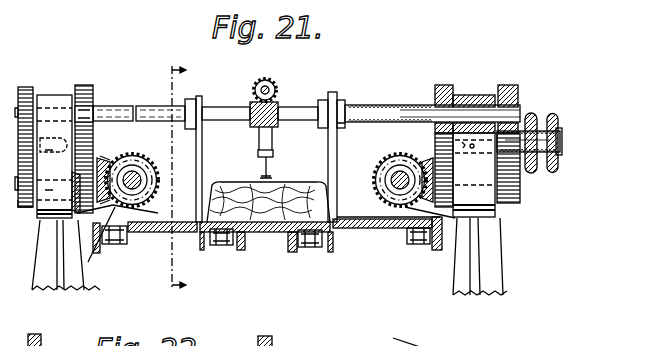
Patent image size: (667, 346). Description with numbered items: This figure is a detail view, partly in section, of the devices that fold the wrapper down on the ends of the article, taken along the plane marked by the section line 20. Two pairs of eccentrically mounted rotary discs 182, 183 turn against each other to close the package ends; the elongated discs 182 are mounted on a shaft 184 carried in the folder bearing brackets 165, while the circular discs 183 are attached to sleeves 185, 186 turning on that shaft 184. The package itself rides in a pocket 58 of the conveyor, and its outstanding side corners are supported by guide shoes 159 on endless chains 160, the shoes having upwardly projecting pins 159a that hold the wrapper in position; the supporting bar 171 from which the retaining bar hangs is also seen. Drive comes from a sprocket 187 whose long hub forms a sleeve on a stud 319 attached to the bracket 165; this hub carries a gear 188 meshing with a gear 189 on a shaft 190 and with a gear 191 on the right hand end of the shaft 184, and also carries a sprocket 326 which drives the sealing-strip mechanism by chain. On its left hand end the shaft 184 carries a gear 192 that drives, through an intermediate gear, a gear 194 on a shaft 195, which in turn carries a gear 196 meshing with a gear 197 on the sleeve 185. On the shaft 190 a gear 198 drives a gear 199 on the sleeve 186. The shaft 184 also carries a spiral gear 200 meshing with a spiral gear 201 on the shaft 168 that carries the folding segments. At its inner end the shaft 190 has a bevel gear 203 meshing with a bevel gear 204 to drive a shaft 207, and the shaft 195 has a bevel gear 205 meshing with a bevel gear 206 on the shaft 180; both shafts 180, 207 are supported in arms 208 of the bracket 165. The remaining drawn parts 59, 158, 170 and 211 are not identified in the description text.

In FIG. 21, the section line 20 is at (189, 179).
In FIG. 21, the pocket 58 is at (227, 247).
In FIG. 21, the roller 59 is at (305, 247).
In FIG. 21, the bracket 158 is at (243, 251).
In FIG. 21, the guide shoe 159 is at (128, 244).
In FIG. 21, the upwardly projecting pin 159a is at (127, 248).
In FIG. 21, the endless chain 160 is at (420, 245).
In FIG. 21, the folder bearing bracket 165 is at (50, 95).
In FIG. 21, the shaft 168 is at (271, 78).
In FIG. 21, the hay mass 170 is at (276, 179).
In FIG. 21, the supporting bar 171 is at (258, 152).
In FIG. 21, the shaft 180 is at (134, 181).
In FIG. 21, the eccentrically mounted rotary disc 182 is at (328, 141).
In FIG. 21, the eccentrically mounted rotary disc 183 is at (196, 161).
In FIG. 21, the shaft 184 is at (291, 106).
In FIG. 21, the sleeve 185 is at (147, 106).
In FIG. 21, the sleeve 186 is at (368, 105).
In FIG. 21, the sprocket 187 is at (550, 174).
In FIG. 21, the gear 188 is at (522, 120).
In FIG. 21, the gear 189 is at (503, 200).
In FIG. 21, the shaft 190 is at (478, 182).
In FIG. 21, the gear 191 is at (512, 81).
In FIG. 21, the gear 192 is at (25, 86).
In FIG. 21, the gear 194 is at (28, 207).
In FIG. 21, the shaft 195 is at (54, 164).
In FIG. 21, the gear 196 is at (96, 242).
In FIG. 21, the gear 197 is at (90, 86).
In FIG. 21, the gear 198 is at (450, 222).
In FIG. 21, the gear 199 is at (437, 86).
In FIG. 21, the spiral gear 200 is at (279, 103).
In FIG. 21, the spiral gear 201 is at (253, 87).
In FIG. 21, the bevel gear 203 is at (435, 145).
In FIG. 21, the bevel gear 204 is at (387, 200).
In FIG. 21, the bevel gear 205 is at (101, 160).
In FIG. 21, the bevel gear 206 is at (150, 158).
In FIG. 21, the shaft 207 is at (392, 177).
In FIG. 21, the arm 208 is at (402, 231).
In FIG. 21, the stud 319 is at (435, 131).
In FIG. 21, the sprocket 326 is at (526, 116).
In FIG. 22, the block 211 is at (49, 337).